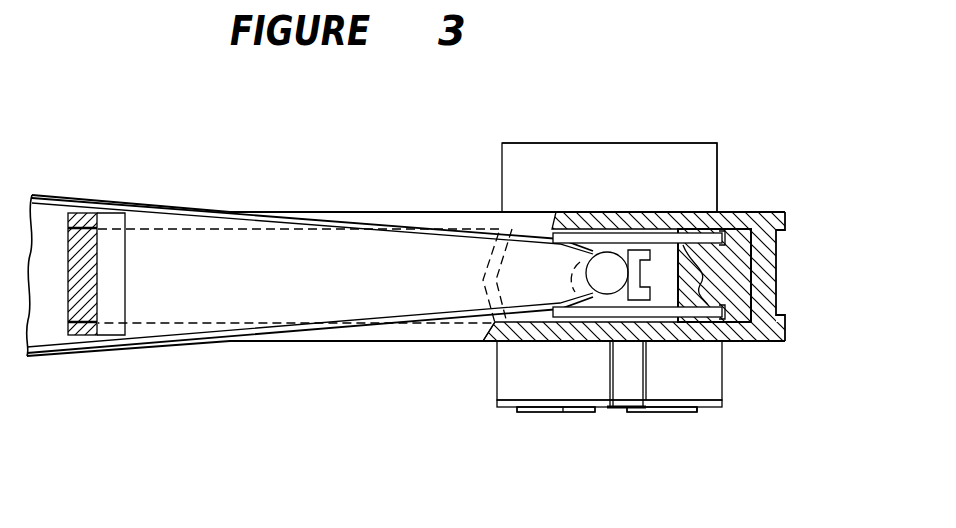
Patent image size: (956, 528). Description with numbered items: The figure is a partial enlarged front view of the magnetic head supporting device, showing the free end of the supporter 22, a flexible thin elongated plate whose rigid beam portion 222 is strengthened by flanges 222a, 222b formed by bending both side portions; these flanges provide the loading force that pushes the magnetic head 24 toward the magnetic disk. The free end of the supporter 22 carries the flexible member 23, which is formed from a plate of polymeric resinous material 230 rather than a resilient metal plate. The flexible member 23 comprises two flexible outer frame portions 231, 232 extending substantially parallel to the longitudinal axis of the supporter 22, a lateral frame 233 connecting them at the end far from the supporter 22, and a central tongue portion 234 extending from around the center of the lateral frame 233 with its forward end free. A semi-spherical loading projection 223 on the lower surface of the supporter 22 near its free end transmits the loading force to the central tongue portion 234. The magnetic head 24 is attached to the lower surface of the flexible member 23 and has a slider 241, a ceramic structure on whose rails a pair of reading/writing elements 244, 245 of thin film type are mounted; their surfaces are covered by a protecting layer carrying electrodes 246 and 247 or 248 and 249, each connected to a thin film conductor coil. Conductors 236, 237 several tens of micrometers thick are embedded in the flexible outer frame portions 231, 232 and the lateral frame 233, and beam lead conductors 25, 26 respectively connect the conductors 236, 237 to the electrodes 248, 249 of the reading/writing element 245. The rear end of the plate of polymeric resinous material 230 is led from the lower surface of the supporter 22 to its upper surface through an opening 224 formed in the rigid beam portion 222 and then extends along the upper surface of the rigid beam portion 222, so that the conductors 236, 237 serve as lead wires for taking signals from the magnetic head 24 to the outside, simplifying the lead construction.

The supporter 22 is at (68, 357).
The rigid beam portion 222 is at (145, 338).
The flange 222a is at (237, 215).
The flange 222b is at (258, 336).
The loading projection 223 is at (578, 270).
The opening 224 is at (122, 260).
The plate of polymeric resinous material 230 is at (78, 268).
The flexible member 23 is at (626, 249).
The flexible outer frame portion 231 is at (630, 212).
The flexible outer frame portion 232 is at (723, 343).
The lateral frame 233 is at (763, 259).
The central tongue portion 234 is at (680, 247).
The conductor 236 is at (757, 288).
The conductor 237 is at (486, 330).
The magnetic head 24 is at (556, 141).
The slider 241 is at (618, 167).
The reading/writing element 244 is at (524, 414).
The reading/writing element 245 is at (688, 412).
The electrode 246 is at (572, 412).
The electrode 247 is at (556, 409).
The electrode 248 is at (653, 412).
The electrode 249 is at (662, 409).
The beam lead conductor 25 is at (647, 370).
The beam lead conductor 26 is at (600, 400).